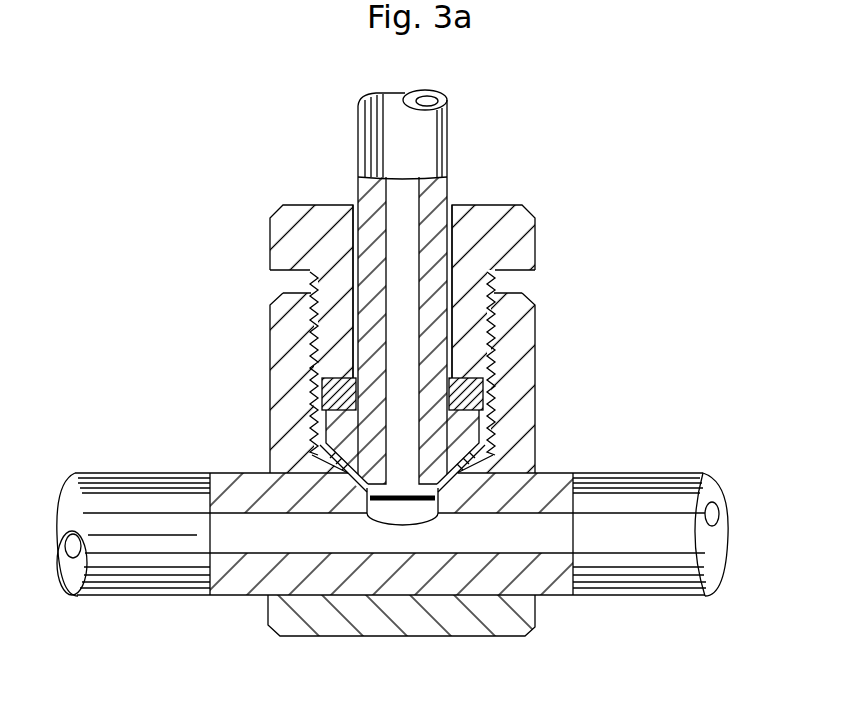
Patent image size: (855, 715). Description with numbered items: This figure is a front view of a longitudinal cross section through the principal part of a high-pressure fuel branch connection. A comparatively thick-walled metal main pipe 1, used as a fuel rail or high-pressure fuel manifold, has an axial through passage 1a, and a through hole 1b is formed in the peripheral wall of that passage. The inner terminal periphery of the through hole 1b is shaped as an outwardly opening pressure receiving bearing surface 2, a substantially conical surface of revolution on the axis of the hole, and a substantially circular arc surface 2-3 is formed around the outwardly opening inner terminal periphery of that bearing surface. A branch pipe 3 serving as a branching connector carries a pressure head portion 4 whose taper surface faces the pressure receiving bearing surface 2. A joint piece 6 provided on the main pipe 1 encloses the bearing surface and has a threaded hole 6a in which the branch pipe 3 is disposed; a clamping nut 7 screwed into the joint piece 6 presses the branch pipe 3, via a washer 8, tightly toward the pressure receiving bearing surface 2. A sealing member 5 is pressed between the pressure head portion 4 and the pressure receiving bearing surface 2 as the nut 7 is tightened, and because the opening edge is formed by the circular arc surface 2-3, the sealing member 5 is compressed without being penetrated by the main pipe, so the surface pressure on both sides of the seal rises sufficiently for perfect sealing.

The main pipe 1 is at (660, 488).
The through passage 1a is at (552, 540).
The through hole 1b is at (397, 516).
The pressure receiving bearing surface 2 is at (352, 475).
The substantially circular arc surface 2-3 is at (462, 472).
The branch pipe 3 is at (430, 138).
The pressure head portion 4 is at (457, 427).
The sealing member 5 is at (306, 466).
The joint piece 6 is at (522, 355).
The threaded hole 6a is at (487, 315).
The clamping nut 7 is at (518, 233).
The washer 8 is at (483, 400).